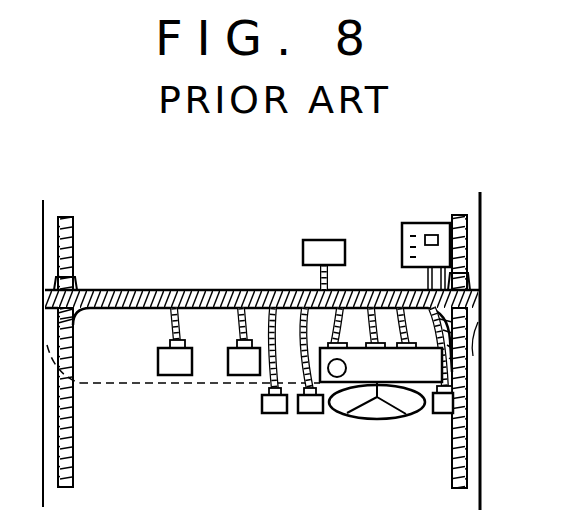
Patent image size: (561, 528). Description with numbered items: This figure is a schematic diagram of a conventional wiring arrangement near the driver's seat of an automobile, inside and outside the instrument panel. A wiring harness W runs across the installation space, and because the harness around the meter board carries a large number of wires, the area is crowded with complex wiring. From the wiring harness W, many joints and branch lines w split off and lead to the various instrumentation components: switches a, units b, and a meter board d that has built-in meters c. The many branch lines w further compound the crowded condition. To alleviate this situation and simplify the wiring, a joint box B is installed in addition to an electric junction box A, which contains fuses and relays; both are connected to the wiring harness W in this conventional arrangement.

The wiring harness W is at (150, 290).
The branch lines w is at (268, 325).
The electric junction box A is at (430, 223).
The joint box B is at (318, 240).
The switches a is at (310, 413).
The units b is at (240, 375).
The meters c is at (337, 378).
The meter board d is at (415, 372).